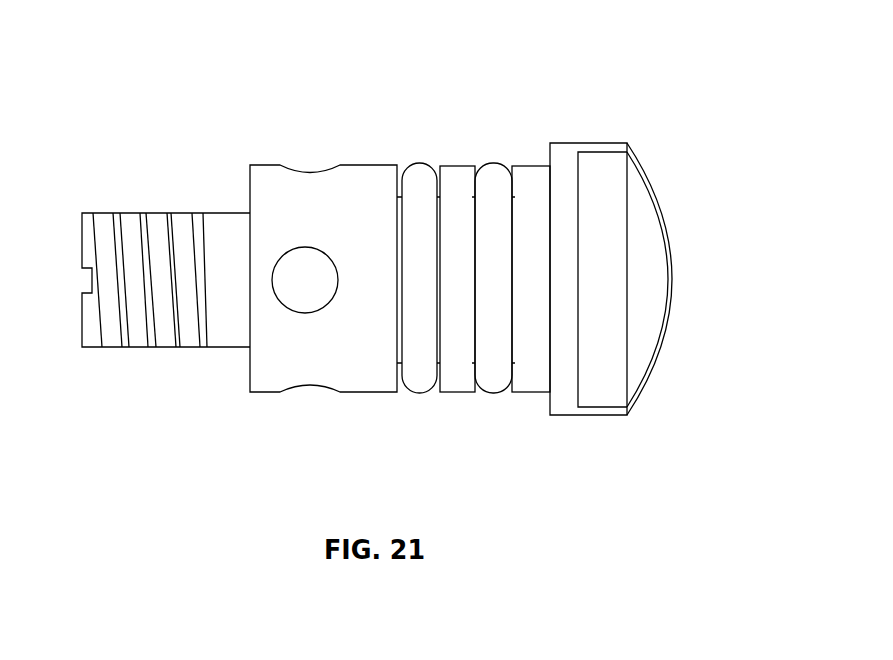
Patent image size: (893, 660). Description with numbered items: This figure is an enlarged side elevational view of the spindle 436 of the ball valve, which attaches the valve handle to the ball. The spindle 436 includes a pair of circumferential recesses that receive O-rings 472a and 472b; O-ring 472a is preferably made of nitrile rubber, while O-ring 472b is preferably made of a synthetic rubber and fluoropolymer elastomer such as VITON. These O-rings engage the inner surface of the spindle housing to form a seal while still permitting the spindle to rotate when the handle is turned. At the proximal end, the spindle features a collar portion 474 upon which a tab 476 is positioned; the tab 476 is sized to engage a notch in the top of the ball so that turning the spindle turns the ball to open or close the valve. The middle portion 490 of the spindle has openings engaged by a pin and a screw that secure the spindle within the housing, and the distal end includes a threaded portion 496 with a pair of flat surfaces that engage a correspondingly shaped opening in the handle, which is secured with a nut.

The spindle 436 is at (262, 84).
The middle portion 490 is at (264, 196).
The threaded portion 496 is at (148, 347).
The O-ring 472a is at (492, 393).
The O-ring 472b is at (418, 393).
The collar portion 474 is at (563, 143).
The tab 476 is at (673, 280).